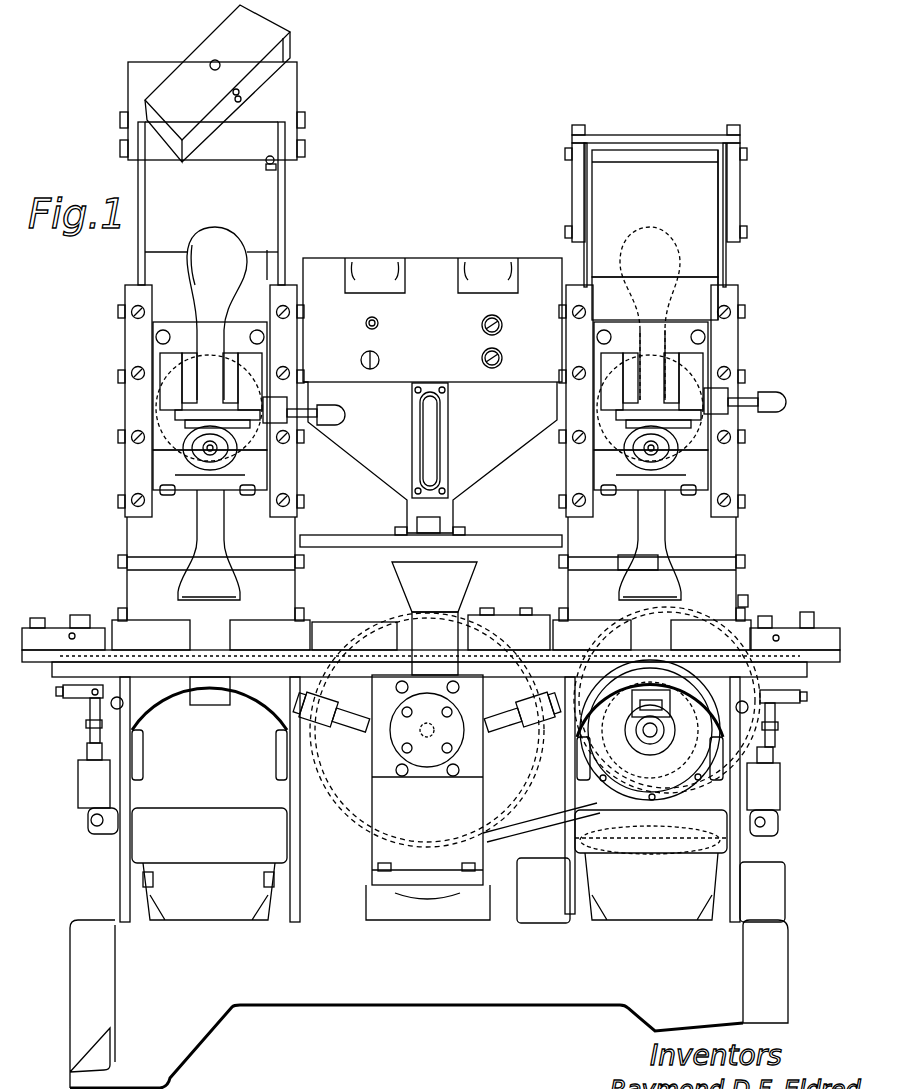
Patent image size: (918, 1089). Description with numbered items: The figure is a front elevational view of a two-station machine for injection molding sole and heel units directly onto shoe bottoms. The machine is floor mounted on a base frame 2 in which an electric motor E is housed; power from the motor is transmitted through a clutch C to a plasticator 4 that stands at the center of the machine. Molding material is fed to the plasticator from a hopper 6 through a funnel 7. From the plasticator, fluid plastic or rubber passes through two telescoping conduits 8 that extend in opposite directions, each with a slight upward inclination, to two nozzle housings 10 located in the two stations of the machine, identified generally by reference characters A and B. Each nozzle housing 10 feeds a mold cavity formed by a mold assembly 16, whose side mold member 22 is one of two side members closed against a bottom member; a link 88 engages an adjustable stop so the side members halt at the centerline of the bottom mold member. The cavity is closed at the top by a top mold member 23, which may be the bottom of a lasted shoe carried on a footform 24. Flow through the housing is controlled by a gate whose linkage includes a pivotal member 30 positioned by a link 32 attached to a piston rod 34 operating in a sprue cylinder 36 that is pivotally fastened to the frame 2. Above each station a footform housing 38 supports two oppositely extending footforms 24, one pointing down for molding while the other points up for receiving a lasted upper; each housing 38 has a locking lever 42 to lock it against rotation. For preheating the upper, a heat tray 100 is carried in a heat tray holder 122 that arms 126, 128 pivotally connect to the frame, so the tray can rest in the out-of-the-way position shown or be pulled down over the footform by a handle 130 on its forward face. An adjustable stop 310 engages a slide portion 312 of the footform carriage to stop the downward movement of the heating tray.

The base frame 2 is at (127, 925).
The plasticator 4 is at (373, 767).
The hopper 6 is at (483, 467).
The funnel 7 is at (460, 588).
The telescoping conduits 8 is at (348, 722).
The nozzle housings 10 is at (210, 705).
The mold assembly 16 is at (755, 597).
The side mold member 22 is at (730, 635).
The top mold member 23 is at (634, 542).
The footform 24 is at (660, 545).
The pivotal member 30 is at (765, 713).
The link 32 is at (768, 728).
The piston rod 34 is at (775, 755).
The sprue cylinder 36 is at (773, 790).
The footform housing 38 is at (697, 430).
The locking lever 42 is at (777, 394).
The link 88 is at (772, 622).
The heat tray 100 is at (292, 38).
The heat tray holder 122 is at (288, 88).
The arm 126 is at (723, 268).
The arm 128 is at (723, 192).
The handle 130 is at (215, 60).
The adjustable stop 310 is at (266, 160).
The slide portion 312 is at (267, 253).
The station A is at (110, 537).
The station B is at (760, 491).
The clutch C is at (667, 780).
The electric motor E is at (667, 685).